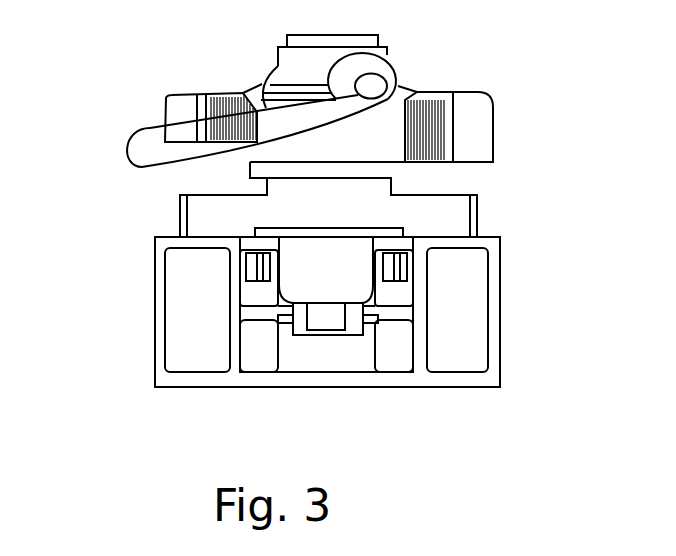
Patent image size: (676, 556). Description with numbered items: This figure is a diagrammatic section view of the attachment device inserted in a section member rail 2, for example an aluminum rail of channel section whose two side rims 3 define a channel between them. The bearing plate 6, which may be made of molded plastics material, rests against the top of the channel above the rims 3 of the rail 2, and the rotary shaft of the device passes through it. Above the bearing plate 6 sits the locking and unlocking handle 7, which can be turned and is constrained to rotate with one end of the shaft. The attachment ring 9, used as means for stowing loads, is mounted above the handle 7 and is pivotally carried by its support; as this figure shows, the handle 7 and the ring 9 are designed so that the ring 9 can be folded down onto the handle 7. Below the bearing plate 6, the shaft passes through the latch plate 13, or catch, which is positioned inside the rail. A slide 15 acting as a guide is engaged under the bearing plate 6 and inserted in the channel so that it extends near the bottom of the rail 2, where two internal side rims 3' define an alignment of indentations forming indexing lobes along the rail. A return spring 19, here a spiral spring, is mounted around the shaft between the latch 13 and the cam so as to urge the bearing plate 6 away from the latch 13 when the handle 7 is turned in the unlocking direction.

The section member rail 2 is at (500, 318).
The side rims 3 is at (316, 235).
The internal side rims 3' is at (308, 381).
The bearing plate 6 is at (210, 212).
The locking and unlocking handle 7 is at (480, 125).
The attachment ring 9 is at (150, 152).
The latch plate 13 is at (427, 263).
The slide 15 is at (357, 280).
The return spring 19 is at (495, 238).